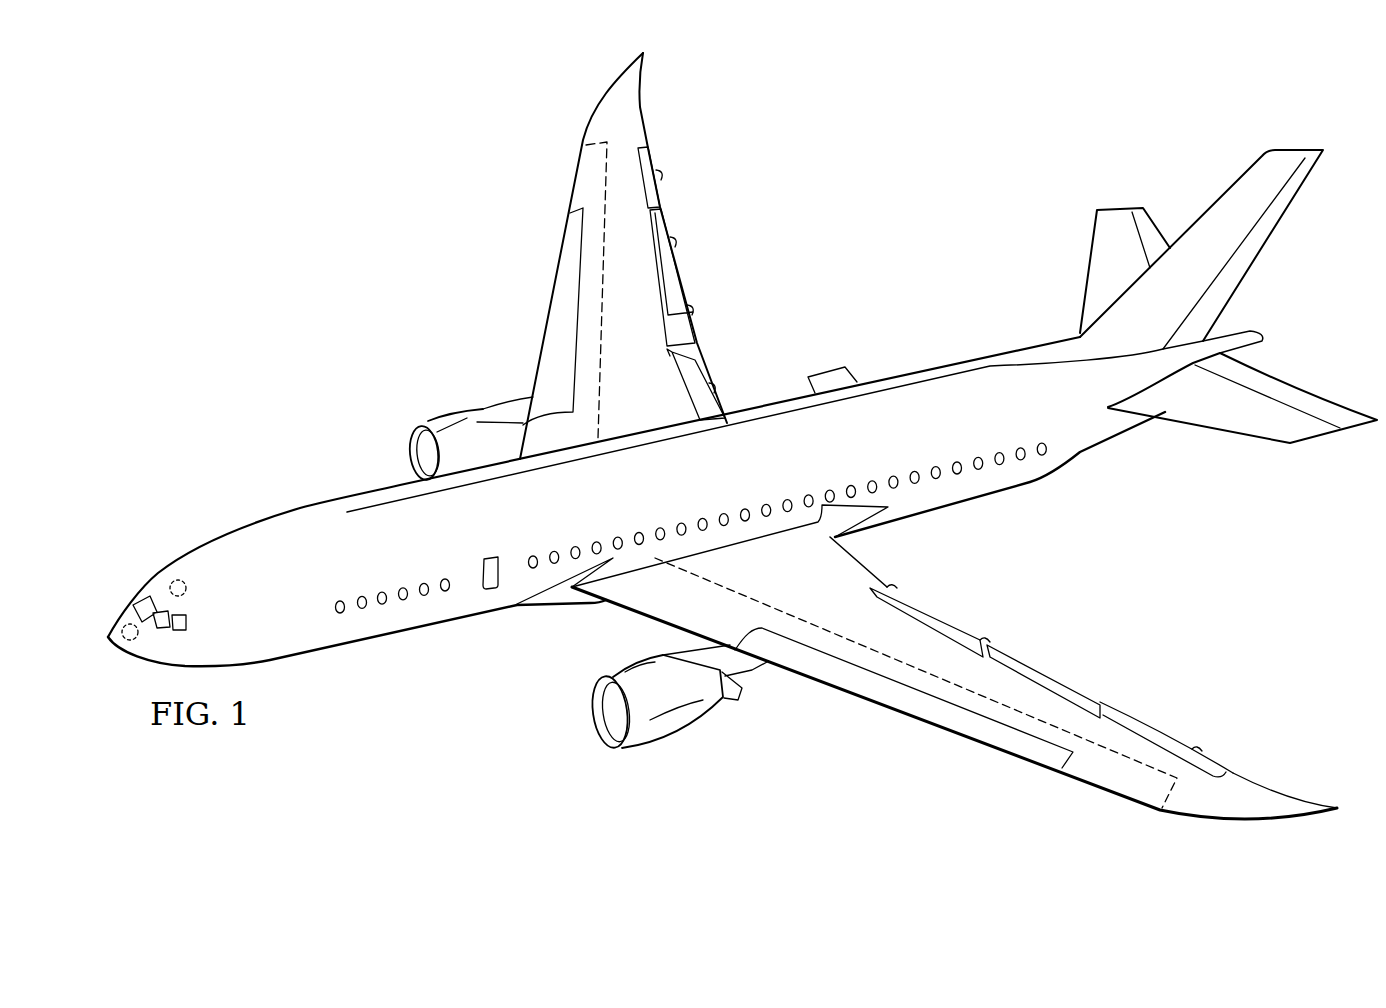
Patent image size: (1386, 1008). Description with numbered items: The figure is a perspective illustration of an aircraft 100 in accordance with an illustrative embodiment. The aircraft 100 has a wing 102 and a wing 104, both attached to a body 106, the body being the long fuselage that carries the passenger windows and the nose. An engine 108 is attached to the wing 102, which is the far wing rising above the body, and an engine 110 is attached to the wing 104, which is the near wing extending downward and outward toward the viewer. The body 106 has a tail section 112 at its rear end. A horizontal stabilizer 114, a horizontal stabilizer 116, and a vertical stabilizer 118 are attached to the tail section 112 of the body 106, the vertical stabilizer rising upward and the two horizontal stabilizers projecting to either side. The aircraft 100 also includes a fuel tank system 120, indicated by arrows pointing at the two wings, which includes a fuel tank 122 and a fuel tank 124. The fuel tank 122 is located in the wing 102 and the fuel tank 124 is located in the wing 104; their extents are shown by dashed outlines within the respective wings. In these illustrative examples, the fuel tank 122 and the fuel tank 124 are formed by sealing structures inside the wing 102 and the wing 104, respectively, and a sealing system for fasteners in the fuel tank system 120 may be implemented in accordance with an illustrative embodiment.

The aircraft 100 is at (396, 302).
The wing 102 is at (642, 90).
The wing 104 is at (1197, 817).
The body 106 is at (278, 514).
The engine 108 is at (448, 405).
The engine 110 is at (677, 742).
The tail section 112 is at (1145, 482).
The horizontal stabilizer 114 is at (1088, 268).
The horizontal stabilizer 116 is at (1247, 433).
The vertical stabilizer 118 is at (1273, 237).
The fuel tank system 120 is at (510, 284).
The fuel tank 122 is at (578, 181).
The fuel tank 124 is at (1120, 787).